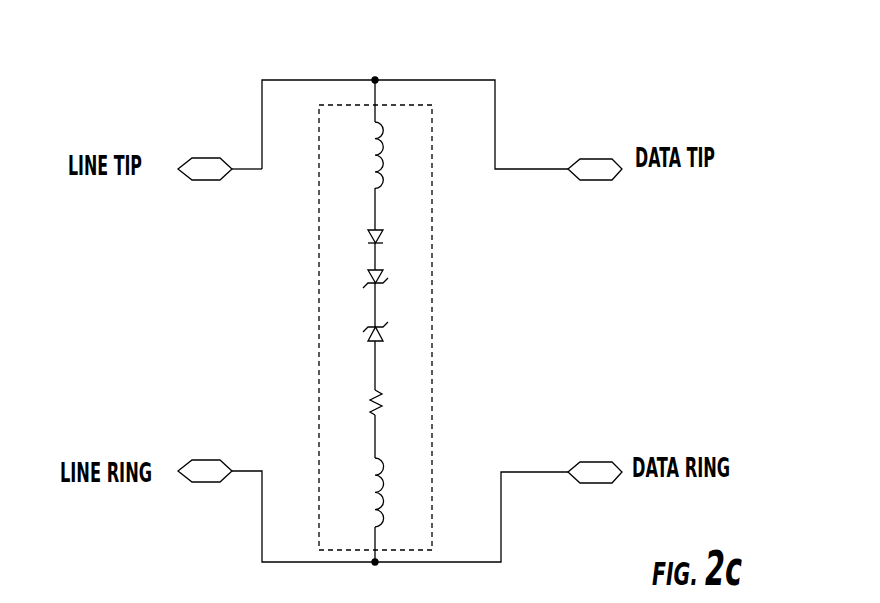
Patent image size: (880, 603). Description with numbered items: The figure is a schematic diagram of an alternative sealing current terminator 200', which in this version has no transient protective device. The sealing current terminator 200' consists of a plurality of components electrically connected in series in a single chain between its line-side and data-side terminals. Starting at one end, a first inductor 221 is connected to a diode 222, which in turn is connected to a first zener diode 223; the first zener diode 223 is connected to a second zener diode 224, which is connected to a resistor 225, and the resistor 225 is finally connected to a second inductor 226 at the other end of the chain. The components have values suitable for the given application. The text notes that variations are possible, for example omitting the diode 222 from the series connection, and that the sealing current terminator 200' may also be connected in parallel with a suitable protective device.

The sealing current terminator 200' is at (458, 285).
The first inductor 221 is at (380, 139).
The diode 222 is at (367, 232).
The first zener diode 223 is at (363, 278).
The second zener diode 224 is at (363, 335).
The resistor 225 is at (372, 395).
The second inductor 226 is at (380, 475).